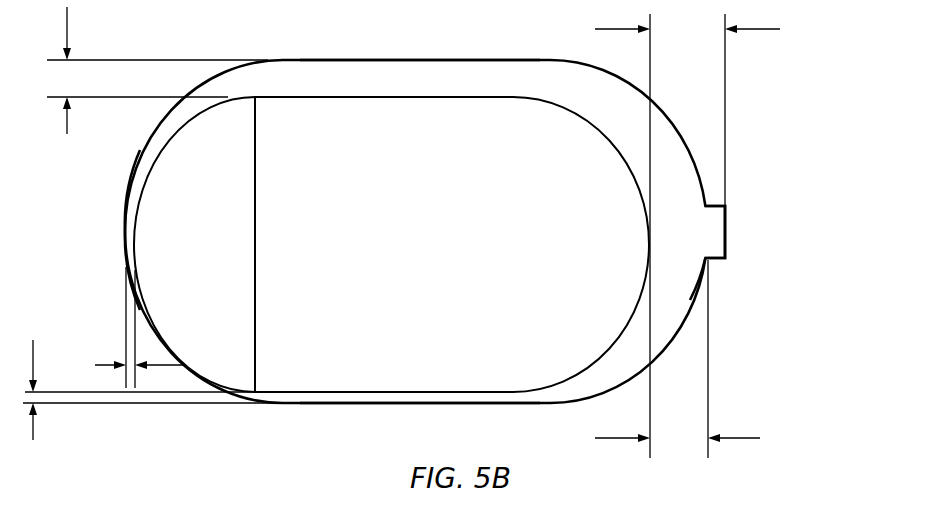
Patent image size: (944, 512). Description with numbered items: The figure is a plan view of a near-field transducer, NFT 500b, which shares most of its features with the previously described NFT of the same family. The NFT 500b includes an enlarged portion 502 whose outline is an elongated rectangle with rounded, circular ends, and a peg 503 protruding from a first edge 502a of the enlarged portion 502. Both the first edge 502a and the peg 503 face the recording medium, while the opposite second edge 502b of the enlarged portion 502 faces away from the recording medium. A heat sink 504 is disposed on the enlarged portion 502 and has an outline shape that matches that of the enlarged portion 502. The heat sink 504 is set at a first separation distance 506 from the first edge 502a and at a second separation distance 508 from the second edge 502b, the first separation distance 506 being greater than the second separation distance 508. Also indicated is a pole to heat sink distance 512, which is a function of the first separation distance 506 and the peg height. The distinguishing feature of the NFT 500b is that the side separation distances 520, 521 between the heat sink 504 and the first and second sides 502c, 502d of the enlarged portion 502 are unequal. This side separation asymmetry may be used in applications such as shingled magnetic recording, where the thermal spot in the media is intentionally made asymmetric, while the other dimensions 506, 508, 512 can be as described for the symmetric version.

The near-field transducer 500b is at (438, 242).
The enlarged portion 502 is at (297, 400).
The first edge 502a is at (705, 273).
The second edge 502b is at (134, 235).
The first side 502c is at (380, 392).
The second side 502d is at (400, 97).
The peg 503 is at (725, 232).
The heat sink 504 is at (170, 211).
The first separation distance 506 is at (698, 359).
The second separation distance 508 is at (121, 327).
The pole to heat sink distance 512 is at (709, 236).
The side separation distance 520 is at (157, 81).
The side separation distance 521 is at (146, 402).